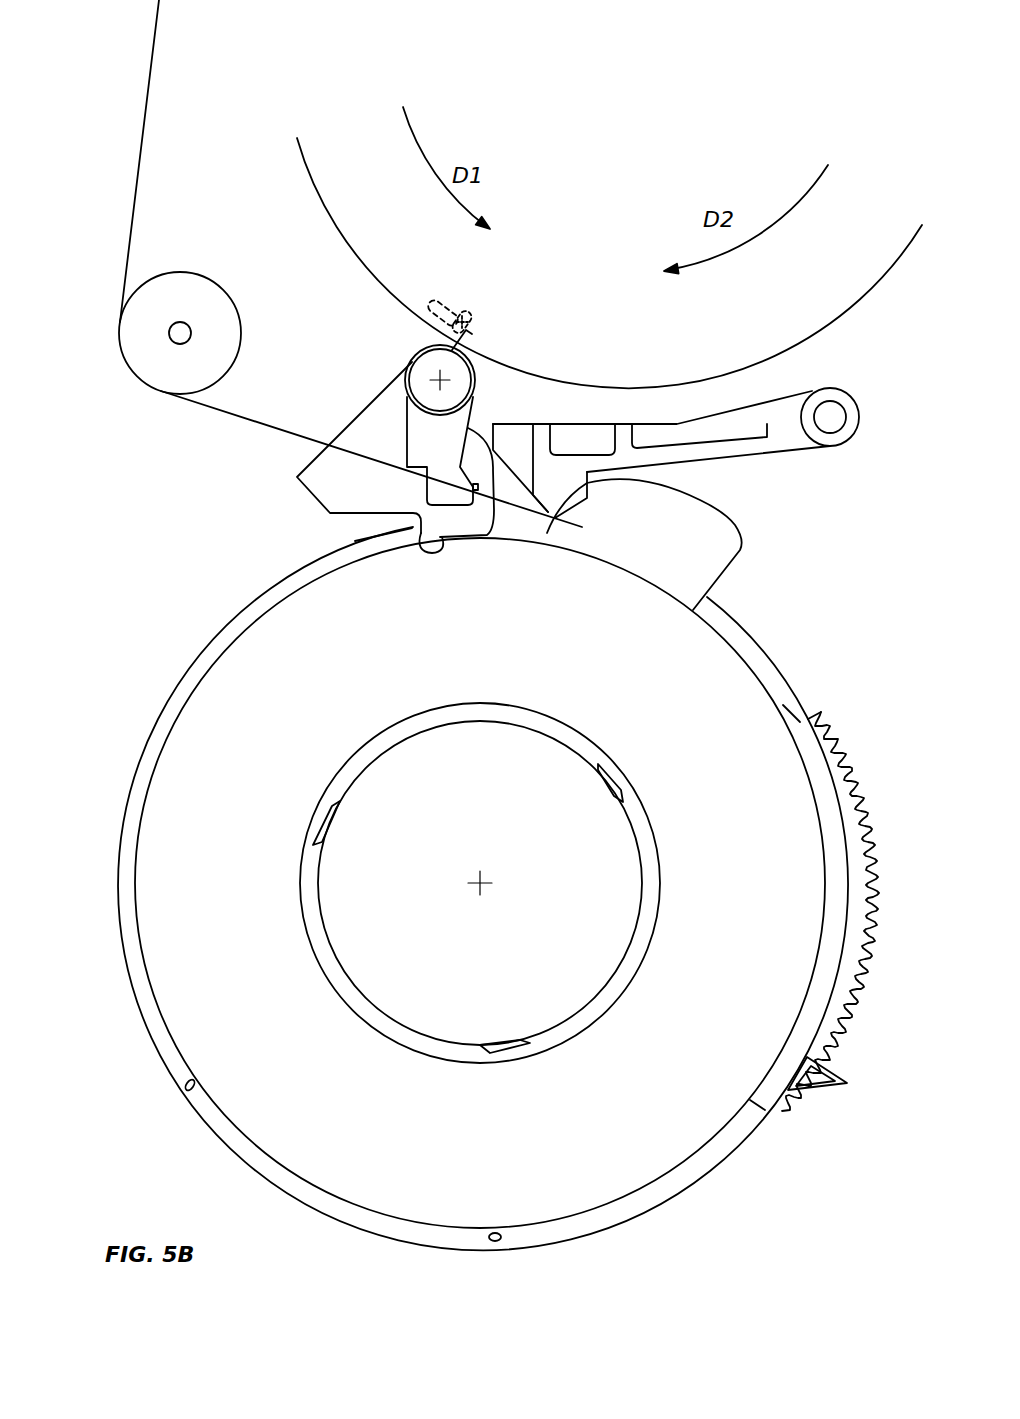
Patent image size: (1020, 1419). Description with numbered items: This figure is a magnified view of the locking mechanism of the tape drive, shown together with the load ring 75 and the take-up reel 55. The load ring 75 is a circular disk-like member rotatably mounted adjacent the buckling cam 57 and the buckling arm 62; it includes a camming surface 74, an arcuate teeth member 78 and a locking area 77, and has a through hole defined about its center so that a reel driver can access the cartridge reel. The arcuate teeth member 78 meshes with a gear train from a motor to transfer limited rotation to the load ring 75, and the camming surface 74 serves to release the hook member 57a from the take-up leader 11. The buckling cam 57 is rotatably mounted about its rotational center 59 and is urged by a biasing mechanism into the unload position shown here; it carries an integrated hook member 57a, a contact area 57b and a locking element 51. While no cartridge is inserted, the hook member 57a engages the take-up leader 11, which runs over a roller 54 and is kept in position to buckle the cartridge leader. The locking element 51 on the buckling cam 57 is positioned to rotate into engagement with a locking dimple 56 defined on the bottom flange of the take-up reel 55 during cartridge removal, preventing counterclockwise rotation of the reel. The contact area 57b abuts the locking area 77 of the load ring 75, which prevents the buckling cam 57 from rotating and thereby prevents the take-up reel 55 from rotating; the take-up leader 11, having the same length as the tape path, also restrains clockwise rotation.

The take-up leader 11 is at (136, 188).
The locking element 51 is at (487, 320).
The belt roller 54 is at (220, 325).
The take-up reel 55 is at (328, 156).
The locking dimple 56 is at (436, 297).
The buckling cam 57 is at (372, 428).
The hook member 57a is at (445, 440).
The contact area 57b is at (440, 548).
The rotational center 59 is at (418, 357).
The buckling arm 62 is at (788, 438).
The camming surface 74 is at (713, 563).
The load ring 75 is at (740, 700).
The locking area 77 is at (365, 540).
The arcuate teeth member 78 is at (855, 845).